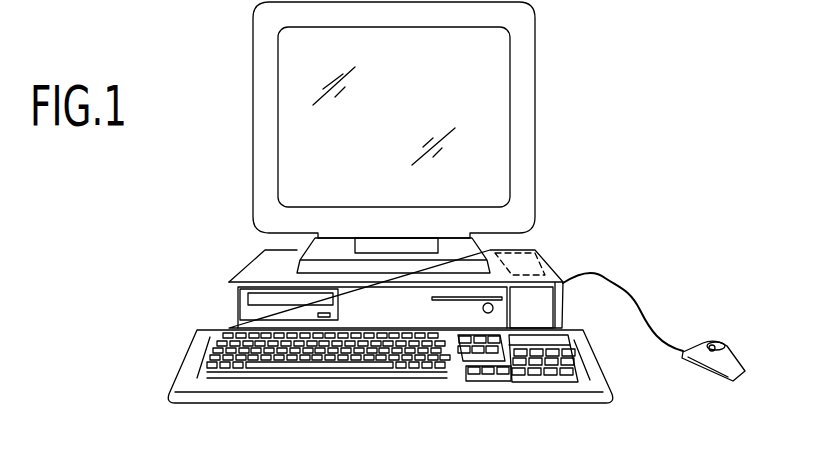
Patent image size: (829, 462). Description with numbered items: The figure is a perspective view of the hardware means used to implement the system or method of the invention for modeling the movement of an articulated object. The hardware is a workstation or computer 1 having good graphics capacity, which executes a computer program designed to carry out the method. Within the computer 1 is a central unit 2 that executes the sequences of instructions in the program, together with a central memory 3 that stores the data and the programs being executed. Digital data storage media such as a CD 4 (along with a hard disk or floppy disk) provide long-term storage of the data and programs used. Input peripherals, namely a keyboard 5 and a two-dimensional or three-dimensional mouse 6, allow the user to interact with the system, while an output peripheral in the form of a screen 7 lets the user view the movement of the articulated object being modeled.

The computer 1 is at (621, 97).
The central unit 2 is at (250, 272).
The central memory 3 is at (538, 253).
The CD 4 is at (267, 297).
The keyboard 5 is at (607, 387).
The mouse 6 is at (720, 347).
The screen 7 is at (265, 102).